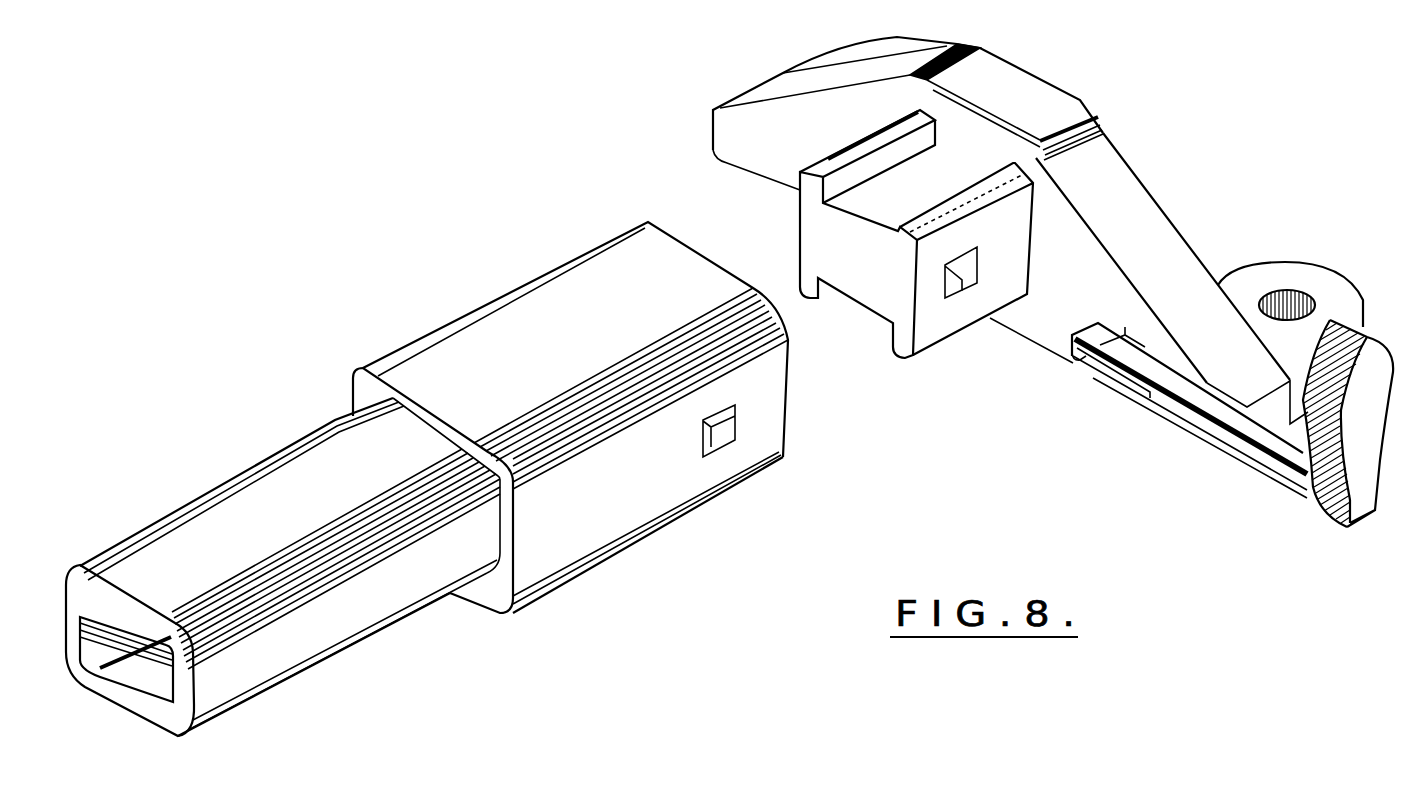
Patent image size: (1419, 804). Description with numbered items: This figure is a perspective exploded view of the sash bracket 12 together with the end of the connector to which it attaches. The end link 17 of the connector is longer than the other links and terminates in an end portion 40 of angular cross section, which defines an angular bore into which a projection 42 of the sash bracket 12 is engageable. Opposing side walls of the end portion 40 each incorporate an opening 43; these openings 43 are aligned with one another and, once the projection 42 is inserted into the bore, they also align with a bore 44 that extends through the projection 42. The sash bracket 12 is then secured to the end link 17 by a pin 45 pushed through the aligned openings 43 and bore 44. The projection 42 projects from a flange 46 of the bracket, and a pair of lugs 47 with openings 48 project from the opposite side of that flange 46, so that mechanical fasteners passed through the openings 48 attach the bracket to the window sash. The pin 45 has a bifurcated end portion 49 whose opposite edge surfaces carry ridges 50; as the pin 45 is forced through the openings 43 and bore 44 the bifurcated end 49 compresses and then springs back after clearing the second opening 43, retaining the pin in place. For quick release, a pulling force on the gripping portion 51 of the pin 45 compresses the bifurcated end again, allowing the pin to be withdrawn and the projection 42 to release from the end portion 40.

The sash bracket 12 is at (1082, 95).
The end link 17 is at (340, 617).
The end portion 40 is at (624, 510).
The projection 42 is at (810, 215).
The opening 43 is at (716, 436).
The bore 44 is at (962, 283).
The pin 45 is at (1241, 451).
The flange 46 is at (1147, 227).
The lug 47 is at (1273, 278).
The opening 48 is at (1300, 297).
The bifurcated end portion 49 is at (1072, 358).
The ridge 50 is at (1116, 338).
The gripping portion 51 is at (1307, 463).